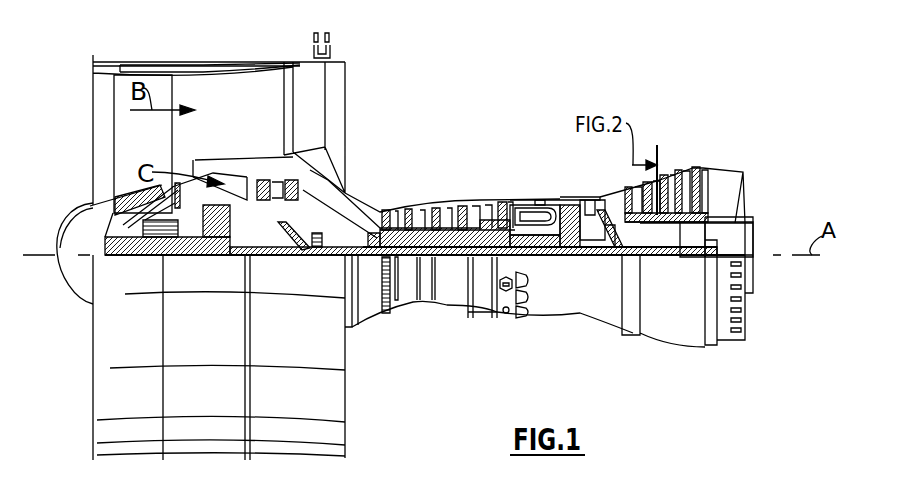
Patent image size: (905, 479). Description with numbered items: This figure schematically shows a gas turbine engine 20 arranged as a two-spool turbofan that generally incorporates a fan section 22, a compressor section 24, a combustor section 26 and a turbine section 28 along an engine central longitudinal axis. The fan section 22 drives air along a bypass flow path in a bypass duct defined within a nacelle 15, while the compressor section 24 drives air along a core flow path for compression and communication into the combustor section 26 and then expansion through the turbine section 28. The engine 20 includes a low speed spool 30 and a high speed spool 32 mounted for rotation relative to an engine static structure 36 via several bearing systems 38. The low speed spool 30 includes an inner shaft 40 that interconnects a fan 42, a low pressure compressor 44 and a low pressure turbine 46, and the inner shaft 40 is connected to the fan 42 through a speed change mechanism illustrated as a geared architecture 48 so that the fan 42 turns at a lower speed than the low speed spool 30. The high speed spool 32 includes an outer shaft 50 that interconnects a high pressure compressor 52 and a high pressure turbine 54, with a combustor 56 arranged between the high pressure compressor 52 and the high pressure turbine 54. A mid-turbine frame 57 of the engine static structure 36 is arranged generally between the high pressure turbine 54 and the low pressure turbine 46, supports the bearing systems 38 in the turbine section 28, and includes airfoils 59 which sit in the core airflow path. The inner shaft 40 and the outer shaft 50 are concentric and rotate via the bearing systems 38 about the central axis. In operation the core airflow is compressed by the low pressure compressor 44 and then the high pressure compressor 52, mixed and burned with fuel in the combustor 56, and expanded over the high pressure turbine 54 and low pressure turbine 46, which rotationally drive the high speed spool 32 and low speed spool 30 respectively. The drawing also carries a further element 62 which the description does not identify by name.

The nacelle 15 is at (219, 60).
The gas turbine engine 20 is at (552, 86).
The fan section 22 is at (171, 50).
The compressor section 24 is at (376, 181).
The combustor section 26 is at (530, 175).
The turbine section 28 is at (644, 141).
The low speed spool 30 is at (453, 264).
The high speed spool 32 is at (483, 213).
The engine static structure 36 is at (482, 318).
The bearing systems 38 is at (322, 250).
The inner shaft 40 is at (360, 258).
The fan 42 is at (160, 150).
The low pressure compressor 44 is at (315, 165).
The low pressure turbine 46 is at (663, 178).
The geared architecture 48 is at (221, 248).
The outer shaft 50 is at (540, 256).
The high pressure compressor 52 is at (442, 212).
The high pressure turbine 54 is at (620, 167).
The combustor 56 is at (530, 212).
The mid-turbine frame 57 is at (630, 175).
The airfoils/vanes 59 is at (620, 218).
The core airflow path 62 is at (680, 257).